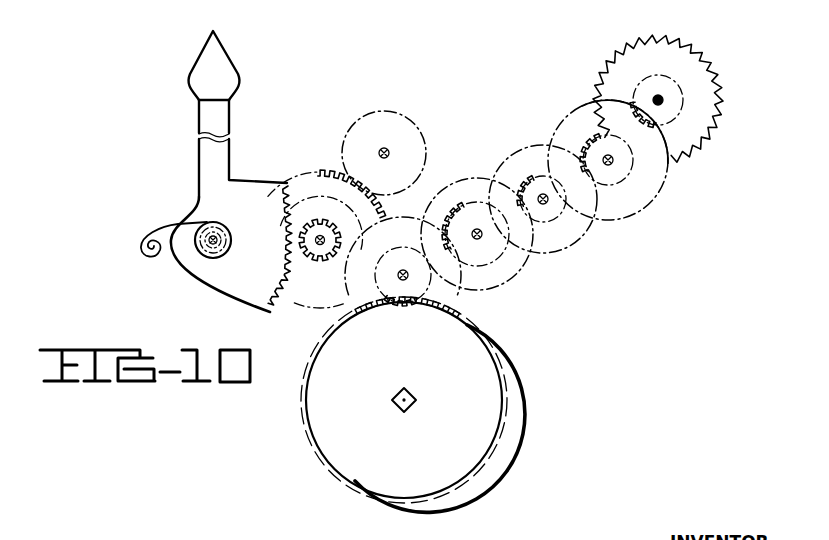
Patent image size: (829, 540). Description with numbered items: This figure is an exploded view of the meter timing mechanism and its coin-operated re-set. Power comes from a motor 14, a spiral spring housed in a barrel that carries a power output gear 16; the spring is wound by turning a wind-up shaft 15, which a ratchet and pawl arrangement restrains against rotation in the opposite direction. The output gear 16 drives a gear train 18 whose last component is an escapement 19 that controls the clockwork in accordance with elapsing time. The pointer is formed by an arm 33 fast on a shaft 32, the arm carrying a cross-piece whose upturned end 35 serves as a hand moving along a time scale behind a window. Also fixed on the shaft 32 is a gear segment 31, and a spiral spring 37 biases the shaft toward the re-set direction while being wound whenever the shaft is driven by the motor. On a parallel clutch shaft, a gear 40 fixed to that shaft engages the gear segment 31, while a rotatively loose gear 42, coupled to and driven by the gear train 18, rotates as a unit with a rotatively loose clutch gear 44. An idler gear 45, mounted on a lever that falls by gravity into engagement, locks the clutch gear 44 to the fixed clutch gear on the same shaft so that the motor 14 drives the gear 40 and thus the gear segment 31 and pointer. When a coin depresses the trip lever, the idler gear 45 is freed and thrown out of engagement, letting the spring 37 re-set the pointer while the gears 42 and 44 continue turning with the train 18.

The motor 14 is at (495, 417).
The wind-up shaft 15 is at (392, 391).
The power output gear 16 is at (448, 298).
The gear train 18 is at (514, 138).
The escapement 19 is at (707, 128).
The gear segment 31 is at (281, 306).
The shaft 32 is at (208, 250).
The arm 33 is at (197, 152).
The upturned end 35 is at (236, 60).
The spiral spring 37 is at (164, 229).
The gear 40 is at (319, 261).
The rotatively loose gear 42 is at (323, 197).
The clutch gear 44 is at (293, 177).
The idler gear 45 is at (384, 111).